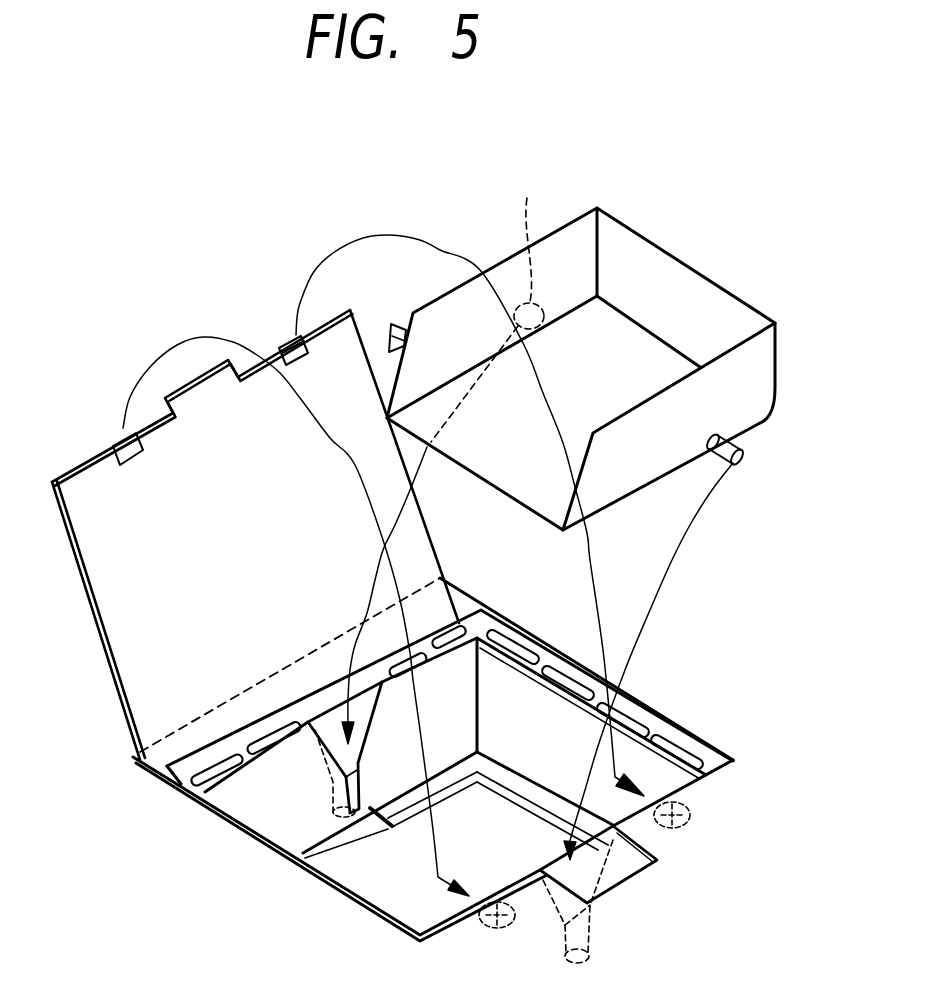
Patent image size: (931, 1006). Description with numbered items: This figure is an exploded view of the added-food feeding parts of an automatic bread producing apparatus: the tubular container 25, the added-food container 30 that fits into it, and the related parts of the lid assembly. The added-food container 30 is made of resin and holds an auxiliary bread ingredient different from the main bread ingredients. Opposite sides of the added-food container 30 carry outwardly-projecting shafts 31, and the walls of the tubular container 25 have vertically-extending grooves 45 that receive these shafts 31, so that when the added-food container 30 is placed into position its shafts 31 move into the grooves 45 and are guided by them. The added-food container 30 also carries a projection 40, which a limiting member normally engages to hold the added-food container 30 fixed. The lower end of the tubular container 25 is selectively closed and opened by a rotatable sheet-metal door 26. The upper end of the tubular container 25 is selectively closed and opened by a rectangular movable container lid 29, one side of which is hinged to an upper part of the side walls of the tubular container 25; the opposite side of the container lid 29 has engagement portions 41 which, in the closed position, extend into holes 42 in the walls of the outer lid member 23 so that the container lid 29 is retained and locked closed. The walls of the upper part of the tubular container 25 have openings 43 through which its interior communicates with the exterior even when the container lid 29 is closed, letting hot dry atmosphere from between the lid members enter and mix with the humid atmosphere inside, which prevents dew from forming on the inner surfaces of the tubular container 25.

The outer lid member 23 is at (250, 855).
The tubular container 25 is at (217, 805).
The door 26 is at (368, 882).
The container lid 29 is at (113, 677).
The added-food container 30 is at (702, 280).
The shafts 31 is at (793, 465).
The projection 40 is at (394, 330).
The engagement portions 41 is at (118, 445).
The holes 42 is at (692, 827).
The openings 43 is at (521, 640).
The grooves 45 is at (343, 806).